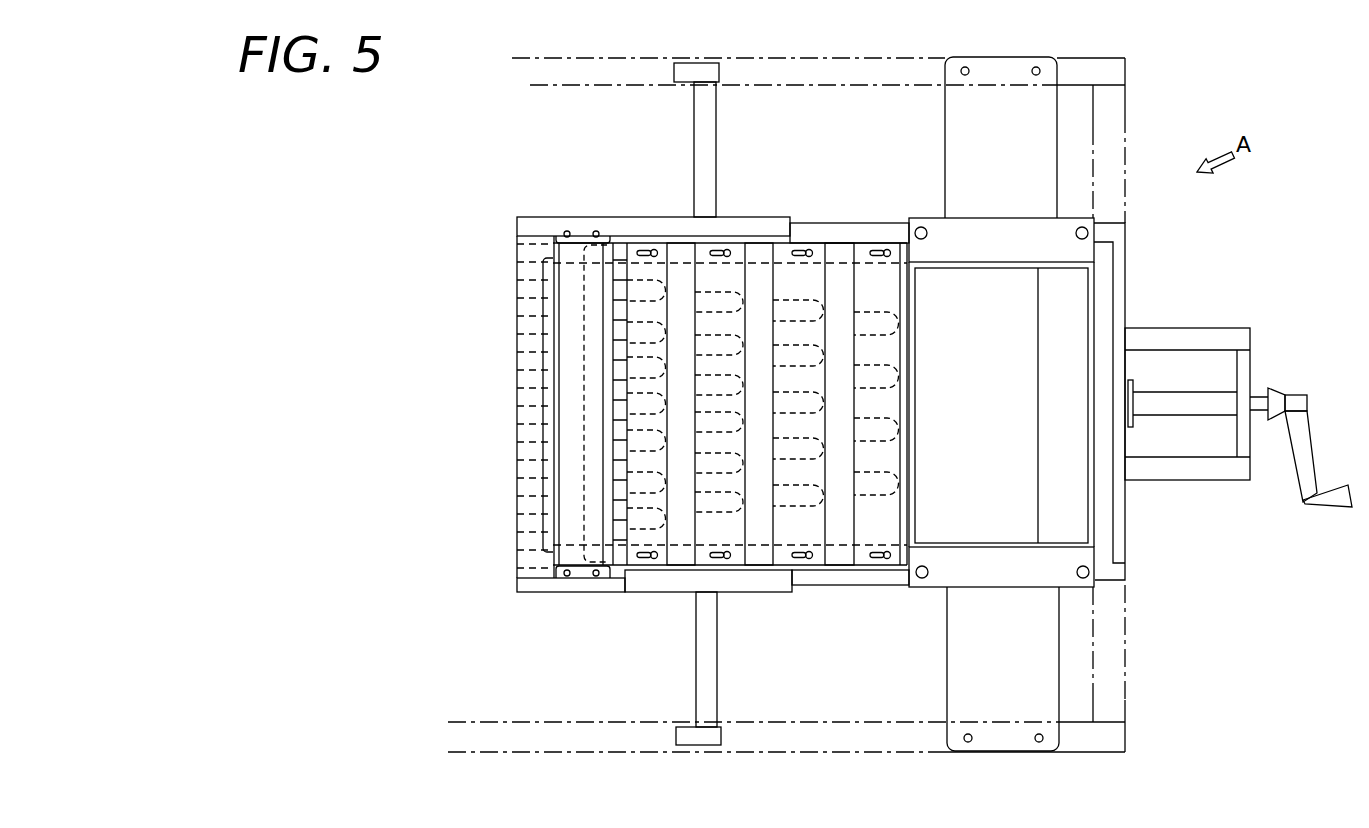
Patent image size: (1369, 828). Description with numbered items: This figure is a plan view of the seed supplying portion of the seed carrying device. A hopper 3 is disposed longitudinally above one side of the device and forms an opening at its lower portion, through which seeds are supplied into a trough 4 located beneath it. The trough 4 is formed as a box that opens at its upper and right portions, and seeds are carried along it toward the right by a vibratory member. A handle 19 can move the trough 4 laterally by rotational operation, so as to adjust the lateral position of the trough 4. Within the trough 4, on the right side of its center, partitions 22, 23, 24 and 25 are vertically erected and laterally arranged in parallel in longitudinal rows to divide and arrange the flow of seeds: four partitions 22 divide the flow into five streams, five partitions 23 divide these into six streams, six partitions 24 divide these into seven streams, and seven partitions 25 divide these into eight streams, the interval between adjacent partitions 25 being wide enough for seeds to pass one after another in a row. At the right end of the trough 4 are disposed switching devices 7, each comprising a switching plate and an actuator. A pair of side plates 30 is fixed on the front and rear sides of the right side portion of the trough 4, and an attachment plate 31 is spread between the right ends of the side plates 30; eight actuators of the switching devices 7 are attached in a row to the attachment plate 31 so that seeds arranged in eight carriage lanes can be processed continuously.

The switching device 7 is at (537, 180).
The side plate 30 is at (607, 224).
The attachment plate 31 is at (520, 561).
The partition 25 is at (665, 282).
The partition 24 is at (744, 295).
The partition 23 is at (824, 303).
The partition 22 is at (897, 335).
The hopper 3 is at (1100, 302).
The trough 4 is at (845, 577).
The handle 19 is at (1337, 507).